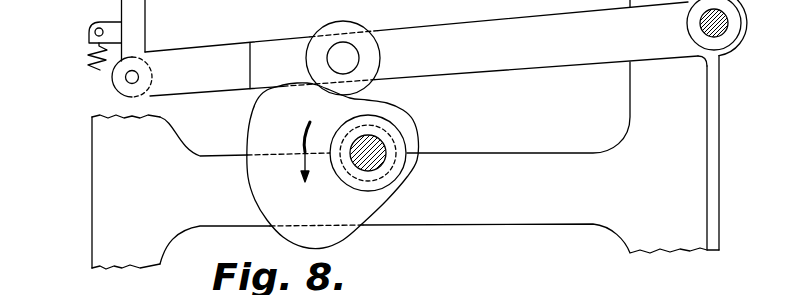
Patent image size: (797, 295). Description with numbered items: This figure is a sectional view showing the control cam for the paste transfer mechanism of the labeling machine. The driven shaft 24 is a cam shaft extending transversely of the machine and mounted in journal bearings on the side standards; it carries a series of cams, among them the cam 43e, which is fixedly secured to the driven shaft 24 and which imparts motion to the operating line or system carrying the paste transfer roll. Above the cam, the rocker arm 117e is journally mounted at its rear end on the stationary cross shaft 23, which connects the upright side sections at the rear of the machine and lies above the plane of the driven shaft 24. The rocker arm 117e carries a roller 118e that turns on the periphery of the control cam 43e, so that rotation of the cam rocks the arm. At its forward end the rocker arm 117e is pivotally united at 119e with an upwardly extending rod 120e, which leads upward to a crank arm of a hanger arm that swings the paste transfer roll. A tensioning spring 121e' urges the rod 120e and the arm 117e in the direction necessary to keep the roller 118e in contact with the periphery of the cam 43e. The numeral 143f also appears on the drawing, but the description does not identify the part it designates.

The frame body 143f is at (359, 147).
The rocker arm 117e is at (551, 54).
The stationary cross shaft 23 is at (722, 25).
The roller 118e is at (367, 58).
The pivot 119e is at (128, 80).
The upwardly extending rod 120e is at (138, 28).
The tensioning spring 121e' is at (71, 46).
The control cam 43e is at (358, 214).
The driven shaft 24 is at (393, 150).